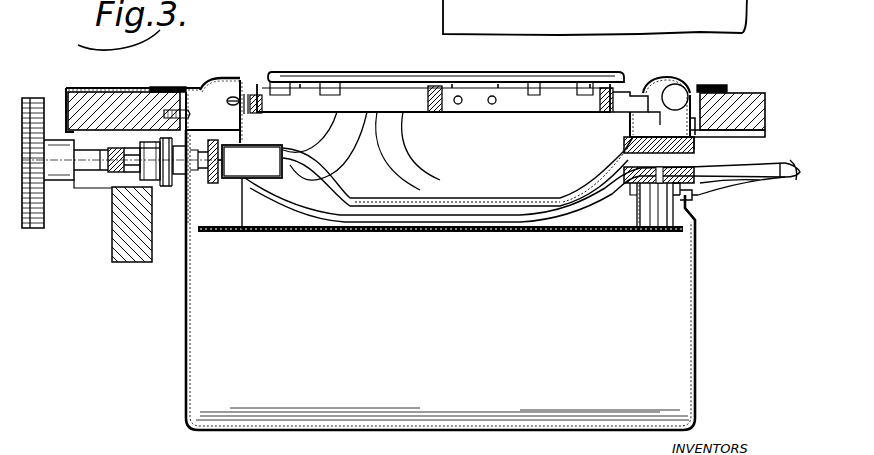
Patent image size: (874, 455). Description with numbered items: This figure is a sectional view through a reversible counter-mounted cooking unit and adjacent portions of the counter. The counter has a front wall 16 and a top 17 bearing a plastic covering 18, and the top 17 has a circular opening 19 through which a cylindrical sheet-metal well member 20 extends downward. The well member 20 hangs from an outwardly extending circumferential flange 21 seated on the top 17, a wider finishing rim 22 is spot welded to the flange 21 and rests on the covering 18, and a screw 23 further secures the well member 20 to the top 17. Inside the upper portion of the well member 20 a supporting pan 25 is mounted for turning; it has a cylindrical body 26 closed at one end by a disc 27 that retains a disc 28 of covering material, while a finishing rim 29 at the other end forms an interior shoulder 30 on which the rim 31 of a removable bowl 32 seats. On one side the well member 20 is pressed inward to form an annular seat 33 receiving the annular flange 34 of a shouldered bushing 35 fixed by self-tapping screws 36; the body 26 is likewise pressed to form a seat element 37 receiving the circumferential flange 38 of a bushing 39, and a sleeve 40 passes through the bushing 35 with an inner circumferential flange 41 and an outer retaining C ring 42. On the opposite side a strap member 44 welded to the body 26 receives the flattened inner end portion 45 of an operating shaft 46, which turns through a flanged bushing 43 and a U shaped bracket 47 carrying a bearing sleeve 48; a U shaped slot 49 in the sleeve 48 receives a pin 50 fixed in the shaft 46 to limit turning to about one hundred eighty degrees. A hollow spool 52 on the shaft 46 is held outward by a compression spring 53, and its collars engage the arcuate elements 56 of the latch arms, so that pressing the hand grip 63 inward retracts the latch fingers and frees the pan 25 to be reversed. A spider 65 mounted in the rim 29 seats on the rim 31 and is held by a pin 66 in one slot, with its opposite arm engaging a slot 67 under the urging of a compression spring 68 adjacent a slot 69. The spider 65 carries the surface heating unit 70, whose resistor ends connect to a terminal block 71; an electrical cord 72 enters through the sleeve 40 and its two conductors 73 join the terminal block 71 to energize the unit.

The front wall 16 is at (112, 250).
The top 17 is at (112, 92).
The covering 18 is at (82, 90).
The circular opening 19 is at (700, 137).
The well member 20 is at (698, 303).
The circumferential flange 21 is at (430, 0).
The finishing rim 22 is at (730, 85).
The screw 23 is at (204, 112).
The supporting pan 25 is at (392, 238).
The cylindrical body 26 is at (247, 228).
The disc 27 is at (510, 232).
The disc 28 is at (564, 232).
The finishing rim 29 is at (222, 78).
The interior shoulder 30 is at (637, 118).
The rim 31 is at (616, 112).
The bowl 32 is at (595, 158).
The annular seat 33 is at (665, 88).
The annular flange 34 is at (700, 210).
The shouldered bushing 35 is at (670, 200).
The self-tapping screws 36 is at (694, 194).
The seat element 37 is at (646, 196).
The circumferential flange 38 is at (633, 186).
The bushing 39 is at (610, 155).
The sleeve 40 is at (652, 226).
The circumferential flange 41 is at (628, 183).
The retaining C ring 42 is at (776, 180).
The flanged bushing 43 is at (194, 176).
The strap member 44 is at (206, 186).
The flattened inner end portion 45 is at (228, 162).
The operating shaft 46 is at (112, 172).
The U shaped bracket 47 is at (146, 182).
The sleeve 48 is at (112, 174).
The U shaped slot 49 is at (146, 148).
The pin 50 is at (118, 146).
The hollow spool 52 is at (162, 88).
The compression spring 53 is at (190, 118).
The arcuate elements 56 is at (166, 186).
The hand grip 63 is at (36, 222).
The spider 65 is at (414, 112).
The pin 66 is at (226, 101).
The slot 67 is at (650, 90).
The compression spring 68 is at (257, 95).
The slot 69 is at (246, 94).
The surface heating unit 70 is at (420, 72).
The terminal block 71 is at (284, 146).
The electrical cord 72 is at (762, 164).
The conductors 73 is at (793, 164).